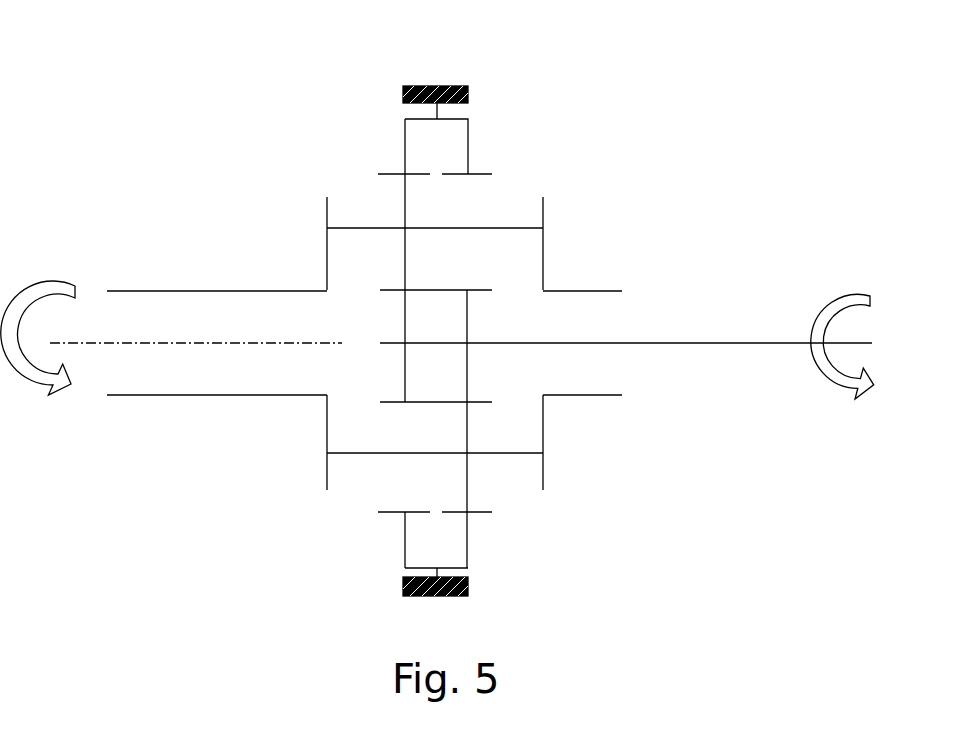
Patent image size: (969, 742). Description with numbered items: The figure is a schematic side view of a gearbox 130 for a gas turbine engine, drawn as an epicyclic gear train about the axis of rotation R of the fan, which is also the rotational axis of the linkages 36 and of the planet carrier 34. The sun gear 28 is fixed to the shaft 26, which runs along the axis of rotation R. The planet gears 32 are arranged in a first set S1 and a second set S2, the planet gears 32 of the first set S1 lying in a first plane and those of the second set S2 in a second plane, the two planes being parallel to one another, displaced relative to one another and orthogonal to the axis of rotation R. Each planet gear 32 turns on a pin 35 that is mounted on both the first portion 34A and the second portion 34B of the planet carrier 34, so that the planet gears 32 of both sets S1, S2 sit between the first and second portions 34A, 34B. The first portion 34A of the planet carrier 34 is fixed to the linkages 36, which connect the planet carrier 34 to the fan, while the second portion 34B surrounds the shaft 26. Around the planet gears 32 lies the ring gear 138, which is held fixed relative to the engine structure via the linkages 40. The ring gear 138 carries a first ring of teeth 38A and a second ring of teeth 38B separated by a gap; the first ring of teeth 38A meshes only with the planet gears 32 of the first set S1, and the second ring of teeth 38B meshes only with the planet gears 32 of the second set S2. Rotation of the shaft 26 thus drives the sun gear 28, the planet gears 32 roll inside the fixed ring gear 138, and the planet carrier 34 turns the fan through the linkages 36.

The gearbox 130 is at (252, 105).
The linkages 40 is at (470, 93).
The ring gear 138 is at (494, 146).
The first ring of teeth 38A is at (379, 175).
The second ring of teeth 38B is at (491, 176).
The sun gear 28 is at (391, 310).
The planet gears 32 is at (404, 250).
The first set of planet gears S1 is at (386, 217).
The second set of planet gears S2 is at (480, 429).
The planet carrier 34 is at (574, 245).
The first portion 34A is at (327, 237).
The second portion 34B is at (543, 218).
The pin 35 is at (493, 229).
The linkages 36 is at (160, 291).
The shaft 26 is at (697, 343).
The axis of rotation R is at (232, 343).